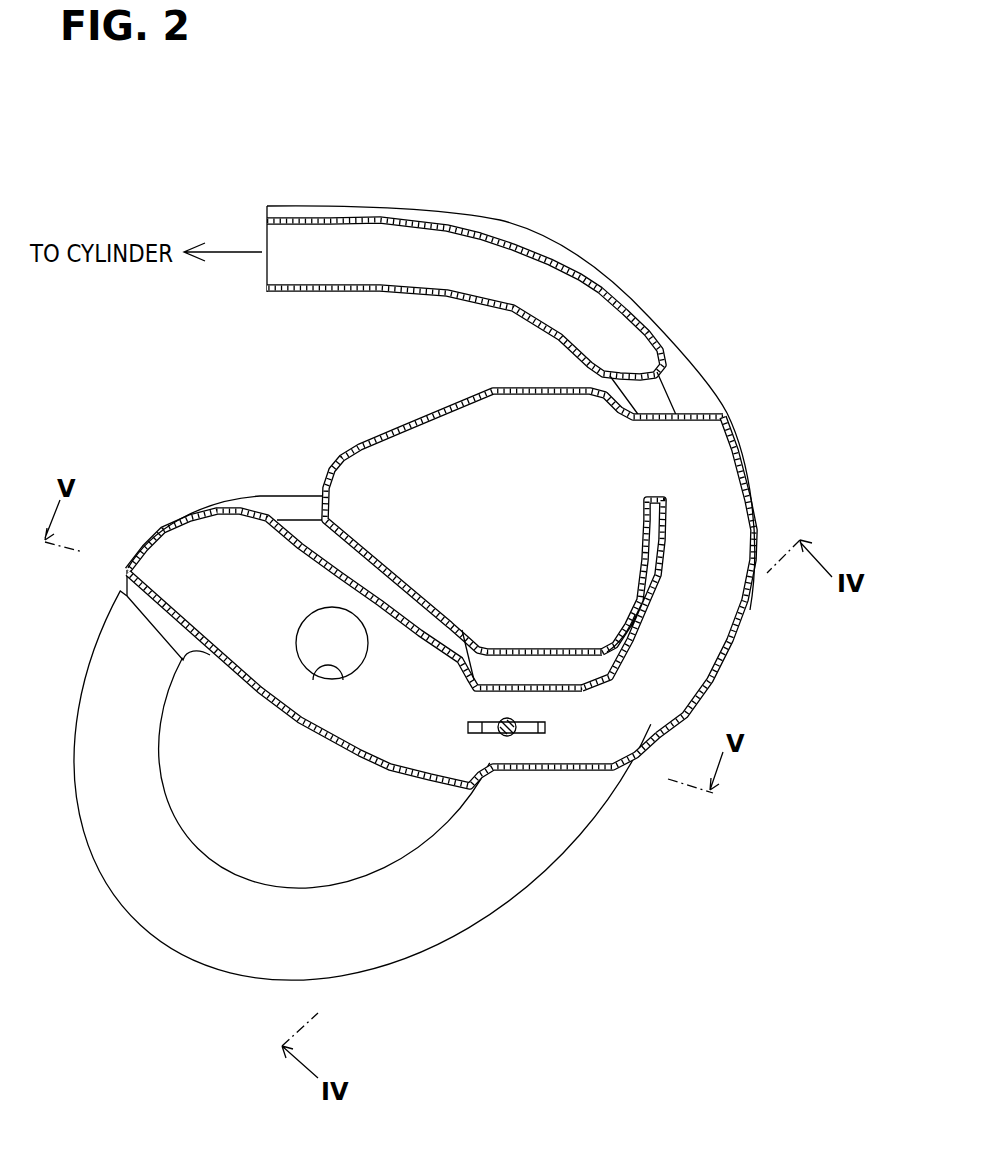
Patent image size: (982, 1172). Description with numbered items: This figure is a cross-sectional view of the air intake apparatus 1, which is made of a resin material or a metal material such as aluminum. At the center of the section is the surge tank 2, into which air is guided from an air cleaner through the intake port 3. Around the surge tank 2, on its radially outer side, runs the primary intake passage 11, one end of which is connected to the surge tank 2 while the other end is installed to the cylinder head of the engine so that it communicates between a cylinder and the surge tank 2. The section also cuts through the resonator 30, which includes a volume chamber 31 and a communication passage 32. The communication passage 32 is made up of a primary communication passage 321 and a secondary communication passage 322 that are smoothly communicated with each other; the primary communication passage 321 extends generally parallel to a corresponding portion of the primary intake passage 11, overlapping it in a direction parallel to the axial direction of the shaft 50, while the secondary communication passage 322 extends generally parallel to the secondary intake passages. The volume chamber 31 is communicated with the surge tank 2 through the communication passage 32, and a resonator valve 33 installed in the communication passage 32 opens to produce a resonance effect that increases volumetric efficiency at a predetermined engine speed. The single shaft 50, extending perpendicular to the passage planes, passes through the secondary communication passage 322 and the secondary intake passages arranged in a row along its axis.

The air intake apparatus 1 is at (232, 168).
The surge tank 2 is at (220, 552).
The intake port 3 is at (320, 678).
The primary intake passage 11 is at (228, 933).
The resonator 30 is at (513, 635).
The volume chamber 31 is at (572, 547).
The communication passage 32 is at (673, 660).
The primary communication passage 321 is at (742, 639).
The secondary communication passage 322 is at (593, 730).
The resonator valve 33 is at (523, 735).
The shaft 50 is at (500, 732).